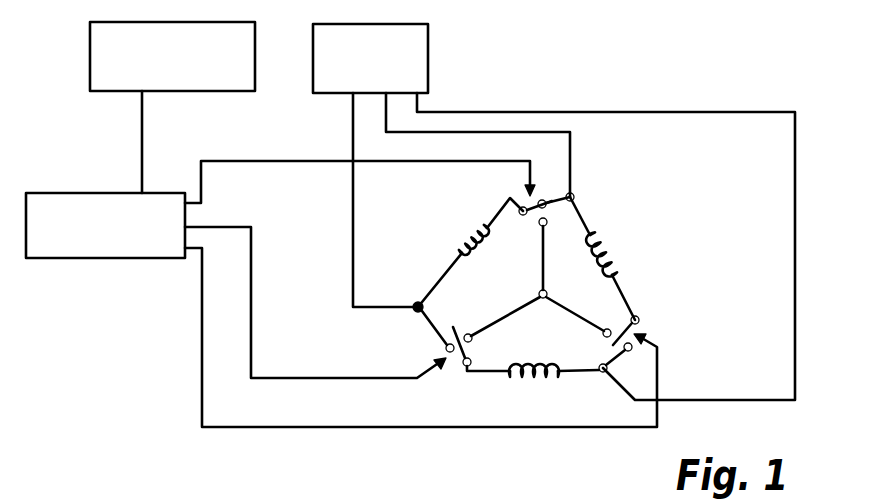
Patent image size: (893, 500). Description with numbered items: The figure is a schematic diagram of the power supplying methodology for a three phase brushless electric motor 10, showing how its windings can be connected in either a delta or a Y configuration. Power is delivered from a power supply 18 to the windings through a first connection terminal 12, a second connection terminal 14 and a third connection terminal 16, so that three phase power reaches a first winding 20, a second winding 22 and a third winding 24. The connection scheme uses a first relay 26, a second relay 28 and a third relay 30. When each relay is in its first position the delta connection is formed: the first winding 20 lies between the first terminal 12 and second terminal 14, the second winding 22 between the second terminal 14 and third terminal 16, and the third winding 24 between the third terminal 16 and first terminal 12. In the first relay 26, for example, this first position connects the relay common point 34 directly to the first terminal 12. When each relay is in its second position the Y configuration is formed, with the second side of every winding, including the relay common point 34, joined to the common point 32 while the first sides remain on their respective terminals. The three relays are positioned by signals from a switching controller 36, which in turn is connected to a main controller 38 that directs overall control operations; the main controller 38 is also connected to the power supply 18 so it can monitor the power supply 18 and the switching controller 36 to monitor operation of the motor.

The motor 10 is at (657, 221).
The first connection terminal 12 is at (575, 197).
The second connection terminal 14 is at (603, 373).
The third connection terminal 16 is at (415, 305).
The power supply 18 is at (428, 48).
The first winding 20 is at (618, 258).
The second winding 22 is at (517, 381).
The third winding 24 is at (462, 240).
The first relay 26 is at (545, 191).
The second relay 28 is at (646, 322).
The third relay 30 is at (453, 368).
The common point 32 is at (543, 298).
The relay common point 34 is at (518, 222).
The switching controller 36 is at (100, 259).
The main controller 38 is at (90, 80).